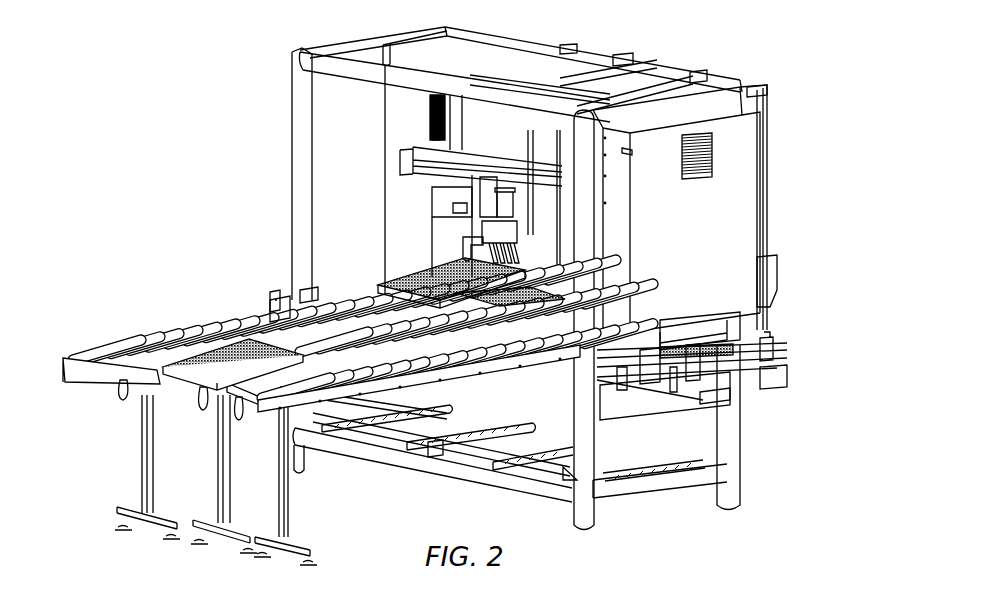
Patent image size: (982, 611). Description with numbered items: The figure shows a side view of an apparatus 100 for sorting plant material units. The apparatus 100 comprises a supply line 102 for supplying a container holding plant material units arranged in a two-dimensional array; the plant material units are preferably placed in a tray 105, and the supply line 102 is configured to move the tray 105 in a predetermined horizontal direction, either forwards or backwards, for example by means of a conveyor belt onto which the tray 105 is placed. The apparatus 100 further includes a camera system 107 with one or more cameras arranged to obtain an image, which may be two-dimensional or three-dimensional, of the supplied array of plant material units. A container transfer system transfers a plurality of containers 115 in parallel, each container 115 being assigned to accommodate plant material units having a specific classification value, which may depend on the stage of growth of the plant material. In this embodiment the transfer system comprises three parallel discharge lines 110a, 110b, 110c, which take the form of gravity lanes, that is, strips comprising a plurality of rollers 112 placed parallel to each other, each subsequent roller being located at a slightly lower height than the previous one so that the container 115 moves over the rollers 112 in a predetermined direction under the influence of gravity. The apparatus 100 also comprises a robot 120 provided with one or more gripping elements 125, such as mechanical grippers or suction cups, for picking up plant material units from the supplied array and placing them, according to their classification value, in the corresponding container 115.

The apparatus 100 is at (222, 66).
The supply line 102 is at (744, 368).
The tray 105 is at (717, 362).
The camera system 107 is at (725, 326).
The discharge line 110a is at (179, 344).
The discharge line 110b is at (312, 346).
The discharge line 110c is at (368, 366).
The rollers 112 is at (223, 330).
The container 115 is at (393, 278).
The robot 120 is at (443, 204).
The gripping elements 125 is at (487, 258).